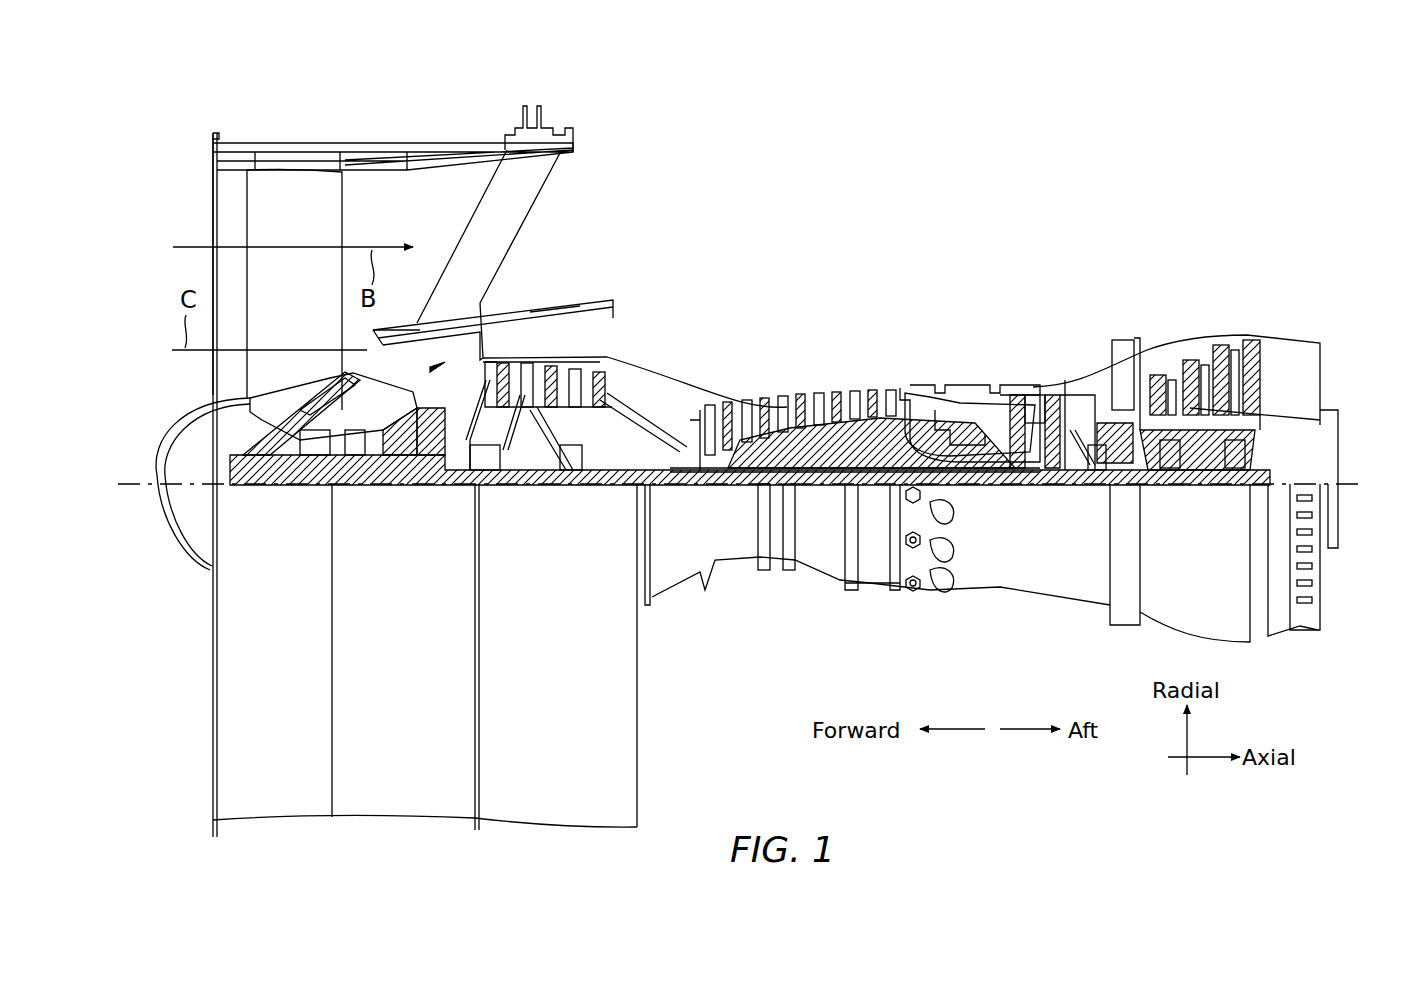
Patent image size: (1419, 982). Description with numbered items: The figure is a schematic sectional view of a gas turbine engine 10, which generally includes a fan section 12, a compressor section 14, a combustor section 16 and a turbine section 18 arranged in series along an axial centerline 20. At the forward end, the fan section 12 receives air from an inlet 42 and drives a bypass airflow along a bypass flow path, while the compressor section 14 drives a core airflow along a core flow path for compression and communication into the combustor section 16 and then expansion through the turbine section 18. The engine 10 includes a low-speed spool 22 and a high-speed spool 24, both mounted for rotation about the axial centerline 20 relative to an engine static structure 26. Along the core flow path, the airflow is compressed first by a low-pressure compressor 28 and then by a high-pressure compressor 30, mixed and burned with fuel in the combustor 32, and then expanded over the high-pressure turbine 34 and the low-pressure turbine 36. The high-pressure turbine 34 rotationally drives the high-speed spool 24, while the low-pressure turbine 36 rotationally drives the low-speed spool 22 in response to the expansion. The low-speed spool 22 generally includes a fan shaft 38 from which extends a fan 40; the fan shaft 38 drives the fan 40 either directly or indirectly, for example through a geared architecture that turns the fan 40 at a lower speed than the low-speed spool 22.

The gas turbine engine 10 is at (1075, 198).
The fan section 12 is at (475, 122).
The compressor section 14 is at (483, 262).
The combustor section 16 is at (1010, 262).
The turbine section 18 is at (1258, 262).
The axial centerline 20 is at (1358, 470).
The low-speed spool 22 is at (828, 482).
The high-speed spool 24 is at (805, 470).
The engine static structure 26 is at (490, 130).
The low-pressure compressor 28 is at (563, 372).
The high-pressure compressor 30 is at (787, 410).
The combustor 32 is at (958, 422).
The high-pressure turbine 34 is at (1050, 380).
The low-pressure turbine 36 is at (1185, 338).
The fan shaft 38 is at (283, 495).
The fan 40 is at (300, 287).
The inlet 42 is at (200, 232).